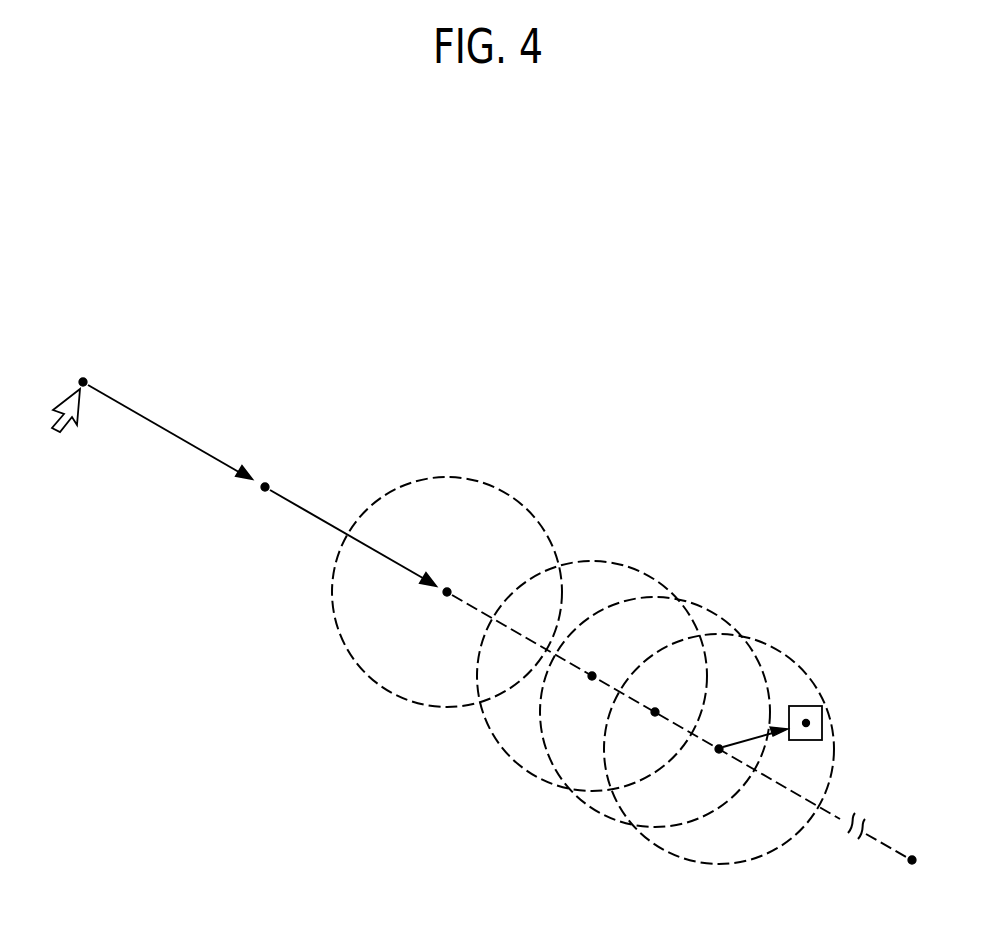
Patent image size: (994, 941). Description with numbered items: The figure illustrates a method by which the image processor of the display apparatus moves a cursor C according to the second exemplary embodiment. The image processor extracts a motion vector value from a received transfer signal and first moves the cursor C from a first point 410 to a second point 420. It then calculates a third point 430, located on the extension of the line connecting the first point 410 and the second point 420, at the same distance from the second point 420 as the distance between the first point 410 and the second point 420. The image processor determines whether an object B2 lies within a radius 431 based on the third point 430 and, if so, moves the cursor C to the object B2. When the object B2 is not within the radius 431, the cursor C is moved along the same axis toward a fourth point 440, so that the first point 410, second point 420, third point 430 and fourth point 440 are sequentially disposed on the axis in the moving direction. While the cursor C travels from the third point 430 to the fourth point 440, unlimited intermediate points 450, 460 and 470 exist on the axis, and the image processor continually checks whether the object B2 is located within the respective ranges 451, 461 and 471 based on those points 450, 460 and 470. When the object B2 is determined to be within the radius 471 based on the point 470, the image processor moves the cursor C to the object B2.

The first point 410 is at (83, 378).
The second point 420 is at (265, 483).
The third point 430 is at (447, 588).
The radius 431 is at (392, 699).
The fourth point 440 is at (912, 864).
The point 450 is at (592, 672).
The range 451 is at (540, 779).
The point 460 is at (655, 708).
The range 461 is at (602, 814).
The point 470 is at (720, 745).
The radius 471 is at (668, 851).
The cursor C is at (62, 435).
The object B2 is at (823, 722).